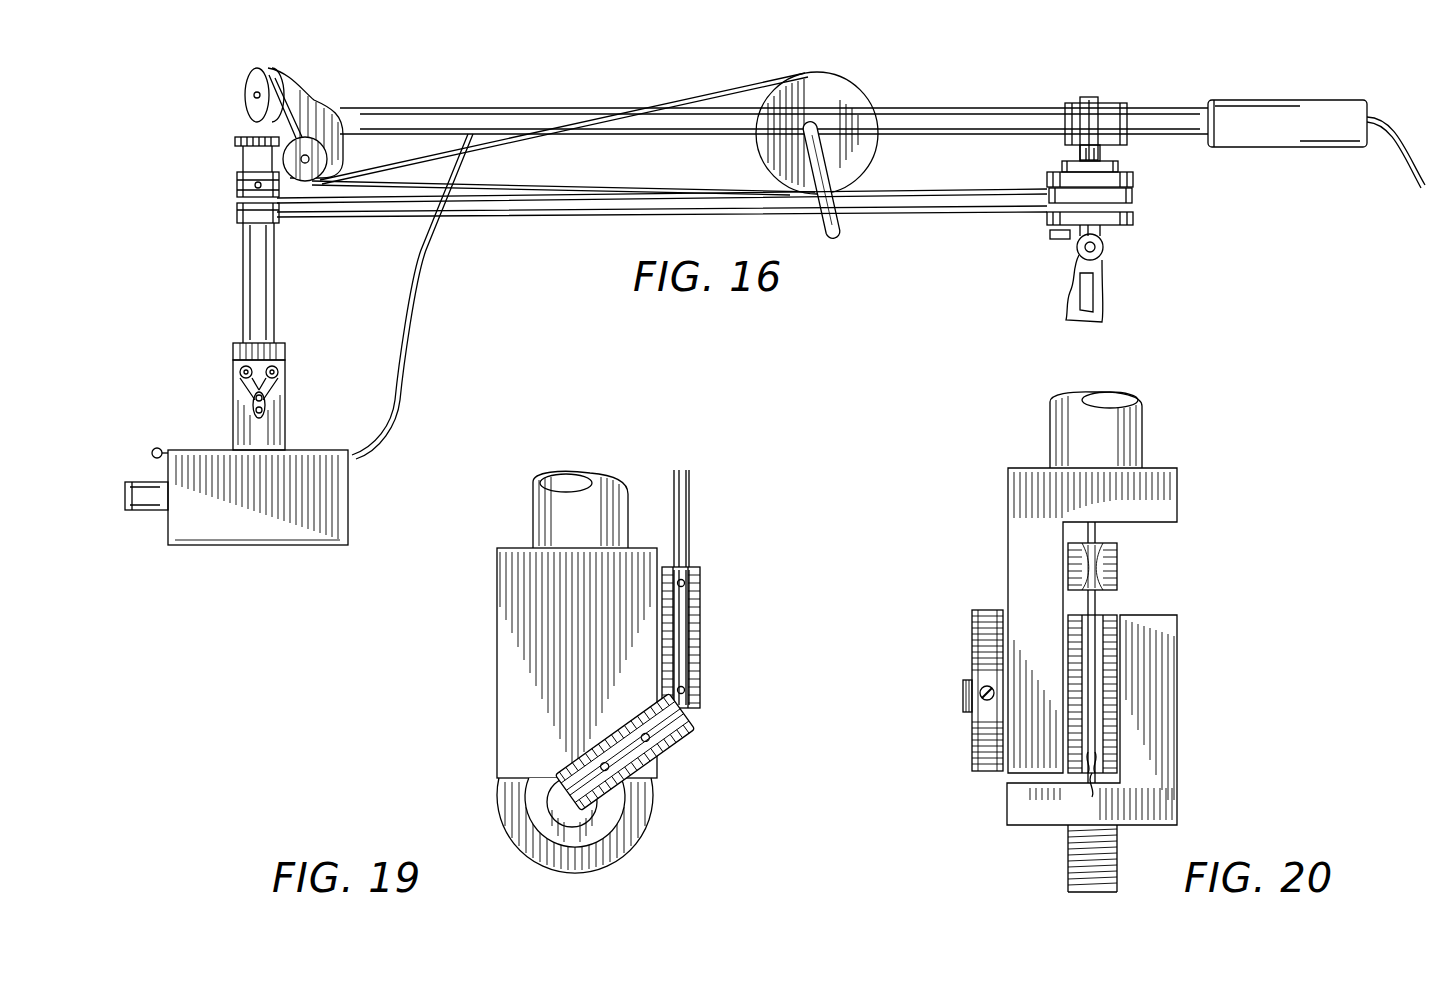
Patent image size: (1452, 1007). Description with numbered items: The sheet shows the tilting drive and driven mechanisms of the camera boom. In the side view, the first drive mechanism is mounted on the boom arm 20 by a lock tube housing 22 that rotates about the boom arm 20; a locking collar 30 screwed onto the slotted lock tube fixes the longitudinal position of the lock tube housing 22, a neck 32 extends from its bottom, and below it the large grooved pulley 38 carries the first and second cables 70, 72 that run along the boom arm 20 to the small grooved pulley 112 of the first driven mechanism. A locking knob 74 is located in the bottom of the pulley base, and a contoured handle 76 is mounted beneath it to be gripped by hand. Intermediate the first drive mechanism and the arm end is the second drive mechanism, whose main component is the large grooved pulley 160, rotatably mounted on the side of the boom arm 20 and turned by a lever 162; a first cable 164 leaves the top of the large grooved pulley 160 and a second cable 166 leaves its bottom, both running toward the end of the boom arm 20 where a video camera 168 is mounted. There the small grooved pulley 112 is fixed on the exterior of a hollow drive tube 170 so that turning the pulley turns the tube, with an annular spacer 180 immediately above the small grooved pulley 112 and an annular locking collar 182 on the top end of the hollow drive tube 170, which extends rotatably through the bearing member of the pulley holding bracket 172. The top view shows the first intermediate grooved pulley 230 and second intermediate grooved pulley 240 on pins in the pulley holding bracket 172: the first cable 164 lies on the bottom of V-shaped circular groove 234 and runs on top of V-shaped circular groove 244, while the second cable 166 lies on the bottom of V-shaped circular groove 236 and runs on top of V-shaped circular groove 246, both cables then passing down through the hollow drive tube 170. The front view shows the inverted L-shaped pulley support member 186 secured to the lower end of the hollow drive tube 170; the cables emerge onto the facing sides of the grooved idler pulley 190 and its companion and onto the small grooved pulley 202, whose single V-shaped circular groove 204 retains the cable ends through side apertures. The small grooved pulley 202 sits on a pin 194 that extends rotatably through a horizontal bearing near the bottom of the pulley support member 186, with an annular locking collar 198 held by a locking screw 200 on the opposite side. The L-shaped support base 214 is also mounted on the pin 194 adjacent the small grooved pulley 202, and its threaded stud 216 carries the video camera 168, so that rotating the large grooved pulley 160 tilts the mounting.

In FIG. 16, the boom arm 20 is at (1010, 104).
In FIG. 19, the boom arm 20 is at (533, 500).
In FIG. 16, the lock tube housing 22 is at (1094, 100).
In FIG. 16, the locking collar 30 is at (1132, 115).
In FIG. 16, the neck 32 is at (1101, 153).
In FIG. 16, the large grooved pulley 38 is at (1134, 222).
In FIG. 16, the first cable 70 is at (597, 204).
In FIG. 16, the second cable 72 is at (553, 219).
In FIG. 16, the locking knob 74 is at (1058, 240).
In FIG. 16, the handle 76 is at (1103, 295).
In FIG. 16, the small grooved pulley 112 is at (237, 215).
In FIG. 16, the large grooved pulley 160 is at (846, 100).
In FIG. 16, the lever 162 is at (839, 231).
In FIG. 16, the first cable 164 is at (733, 93).
In FIG. 19, the first cable 164 is at (681, 486).
In FIG. 20, the first cable 164 is at (1097, 532).
In FIG. 16, the second cable 166 is at (624, 188).
In FIG. 19, the second cable 166 is at (690, 532).
In FIG. 16, the video camera 168 is at (340, 482).
In FIG. 16, the hollow drive tube 170 is at (276, 305).
In FIG. 19, the hollow drive tube 170 is at (548, 805).
In FIG. 20, the hollow drive tube 170 is at (1143, 436).
In FIG. 16, the pulley holding bracket 172 is at (315, 100).
In FIG. 19, the pulley holding bracket 172 is at (497, 702).
In FIG. 16, the annular spacer 180 is at (237, 180).
In FIG. 16, the annular locking collar 182 is at (235, 140).
In FIG. 19, the annular locking collar 182 is at (650, 822).
In FIG. 16, the pulley support member 186 is at (285, 370).
In FIG. 20, the pulley support member 186 is at (1177, 477).
In FIG. 20, the grooved idler pulley 190 is at (1117, 565).
In FIG. 20, the pin 194 is at (963, 696).
In FIG. 20, the annular locking collar 198 is at (972, 735).
In FIG. 20, the locking screw 200 is at (980, 690).
In FIG. 20, the small grooved pulley 202 is at (1117, 616).
In FIG. 20, the V-shaped circular groove 204 is at (1092, 778).
In FIG. 16, the L-shaped support base 214 is at (280, 408).
In FIG. 20, the L-shaped support base 214 is at (1177, 722).
In FIG. 20, the threaded stud 216 is at (1117, 840).
In FIG. 16, the first intermediate grooved pulley 230 is at (329, 150).
In FIG. 19, the first intermediate grooved pulley 230 is at (709, 640).
In FIG. 19, the V-shaped circular groove 234 is at (685, 690).
In FIG. 19, the V-shaped circular groove 236 is at (685, 583).
In FIG. 16, the second intermediate grooved pulley 240 is at (263, 70).
In FIG. 19, the second intermediate grooved pulley 240 is at (653, 759).
In FIG. 19, the V-shaped circular groove 244 is at (655, 793).
In FIG. 19, the V-shaped circular groove 246 is at (660, 766).